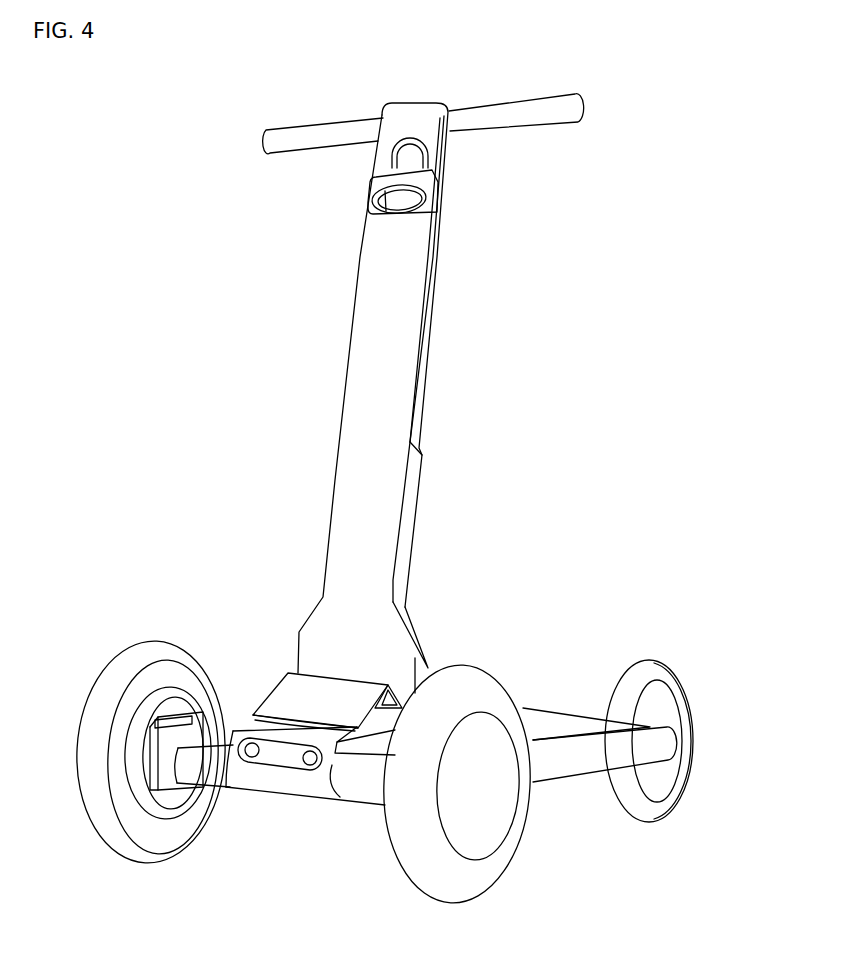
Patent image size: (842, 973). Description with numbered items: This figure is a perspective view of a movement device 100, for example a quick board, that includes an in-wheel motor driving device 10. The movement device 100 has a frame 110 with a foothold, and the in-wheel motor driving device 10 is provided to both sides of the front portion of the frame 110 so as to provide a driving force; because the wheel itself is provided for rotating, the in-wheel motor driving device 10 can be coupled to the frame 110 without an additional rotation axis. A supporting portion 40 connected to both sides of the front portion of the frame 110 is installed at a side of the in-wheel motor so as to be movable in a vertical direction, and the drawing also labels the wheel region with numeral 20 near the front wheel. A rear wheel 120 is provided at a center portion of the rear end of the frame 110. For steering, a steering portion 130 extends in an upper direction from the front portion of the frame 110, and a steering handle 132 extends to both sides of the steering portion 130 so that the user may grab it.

The movement device 100 is at (330, 68).
The steering handle 132 is at (507, 117).
The steering portion 130 is at (365, 376).
The in-wheel motor driving device 10 is at (110, 655).
The wheel hub 20 is at (112, 800).
The supporting portion 40 is at (175, 705).
The frame 110 is at (565, 725).
The rear wheel 120 is at (682, 660).